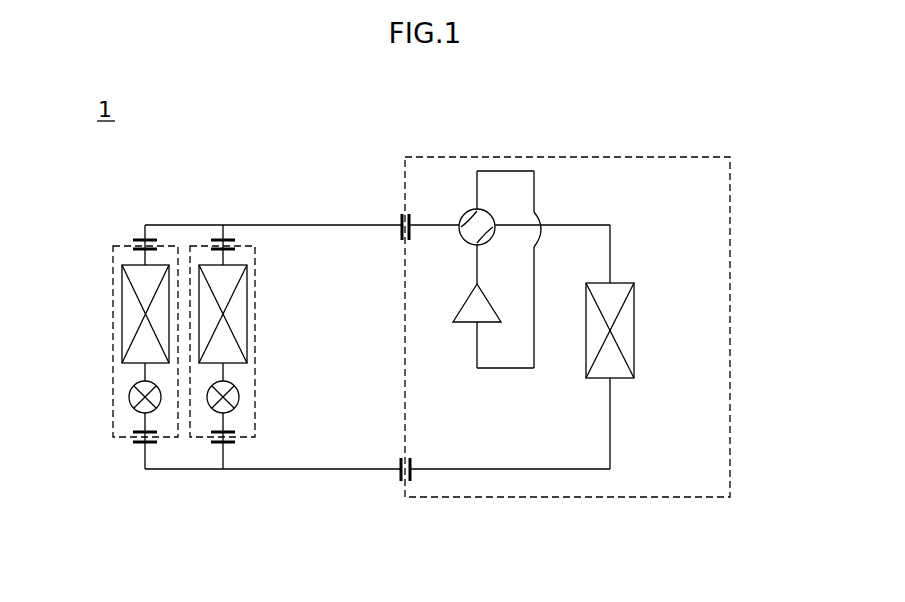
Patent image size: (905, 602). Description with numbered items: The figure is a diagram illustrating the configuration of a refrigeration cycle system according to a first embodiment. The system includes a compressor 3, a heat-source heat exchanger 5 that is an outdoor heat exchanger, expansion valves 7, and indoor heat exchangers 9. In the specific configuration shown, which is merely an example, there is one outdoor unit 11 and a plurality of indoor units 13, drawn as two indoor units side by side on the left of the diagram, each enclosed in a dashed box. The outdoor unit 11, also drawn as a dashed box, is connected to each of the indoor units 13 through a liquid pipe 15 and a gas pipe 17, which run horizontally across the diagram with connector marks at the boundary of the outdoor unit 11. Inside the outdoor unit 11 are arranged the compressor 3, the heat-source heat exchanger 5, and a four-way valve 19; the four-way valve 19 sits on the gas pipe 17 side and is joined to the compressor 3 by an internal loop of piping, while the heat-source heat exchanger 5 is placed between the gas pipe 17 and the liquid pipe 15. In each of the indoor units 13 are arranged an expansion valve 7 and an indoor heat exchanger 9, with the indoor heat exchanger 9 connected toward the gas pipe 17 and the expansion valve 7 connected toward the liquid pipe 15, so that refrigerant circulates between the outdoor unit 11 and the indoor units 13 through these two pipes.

The compressor 3 is at (455, 324).
The heat-source heat exchanger 5 is at (635, 328).
The expansion valve 7 is at (130, 400).
The indoor heat exchanger 9 is at (122, 285).
The outdoor unit 11 is at (733, 172).
The indoor unit 13 is at (113, 350).
The liquid pipe 15 is at (340, 470).
The gas pipe 17 is at (335, 225).
The four-way valve 19 is at (490, 213).